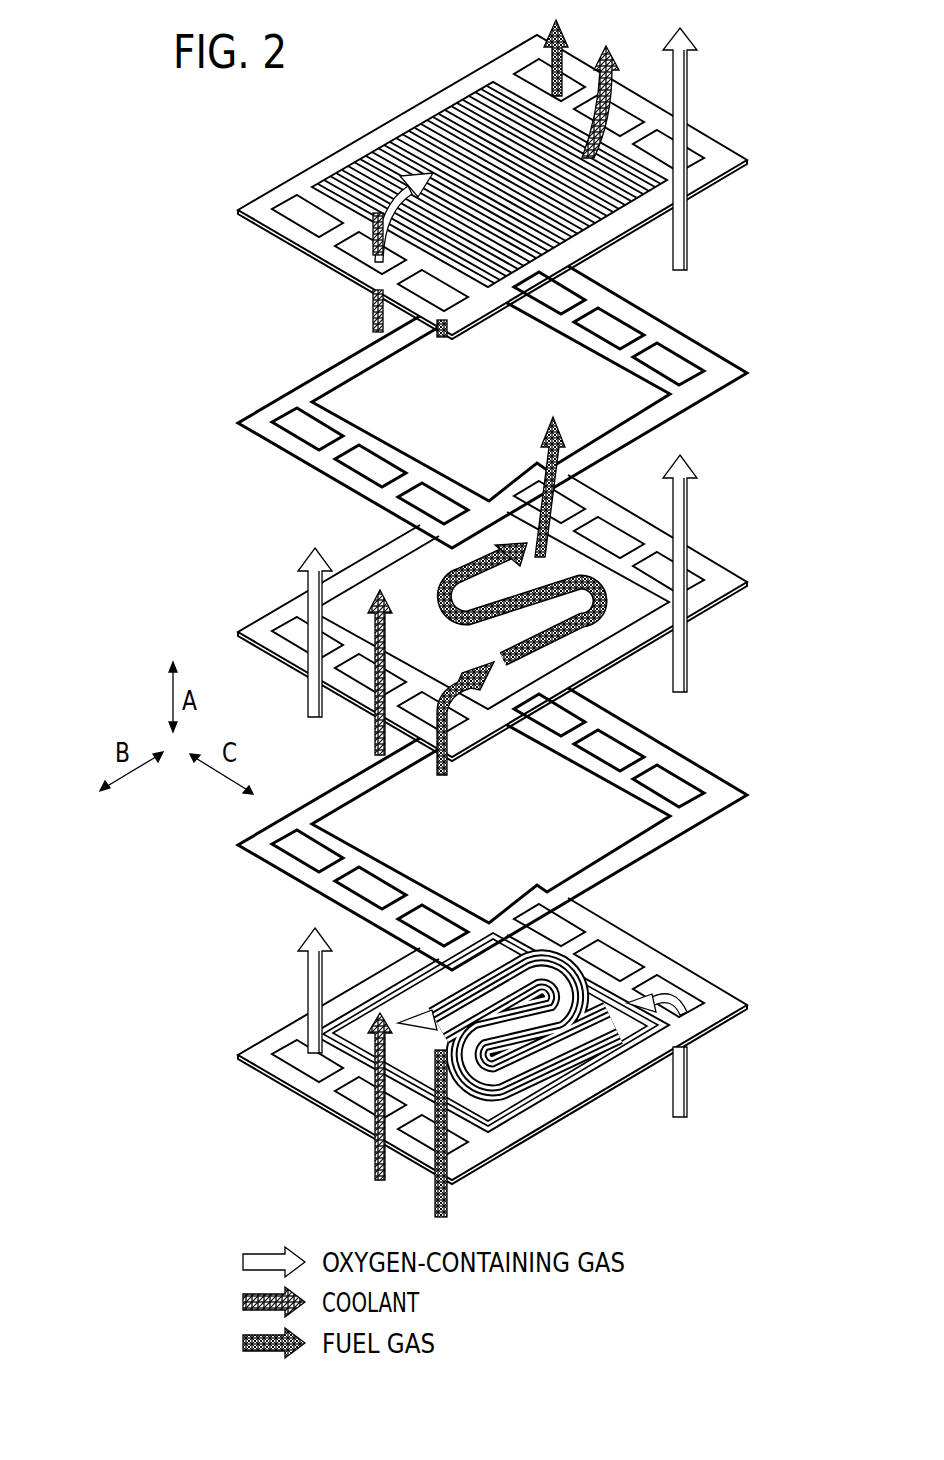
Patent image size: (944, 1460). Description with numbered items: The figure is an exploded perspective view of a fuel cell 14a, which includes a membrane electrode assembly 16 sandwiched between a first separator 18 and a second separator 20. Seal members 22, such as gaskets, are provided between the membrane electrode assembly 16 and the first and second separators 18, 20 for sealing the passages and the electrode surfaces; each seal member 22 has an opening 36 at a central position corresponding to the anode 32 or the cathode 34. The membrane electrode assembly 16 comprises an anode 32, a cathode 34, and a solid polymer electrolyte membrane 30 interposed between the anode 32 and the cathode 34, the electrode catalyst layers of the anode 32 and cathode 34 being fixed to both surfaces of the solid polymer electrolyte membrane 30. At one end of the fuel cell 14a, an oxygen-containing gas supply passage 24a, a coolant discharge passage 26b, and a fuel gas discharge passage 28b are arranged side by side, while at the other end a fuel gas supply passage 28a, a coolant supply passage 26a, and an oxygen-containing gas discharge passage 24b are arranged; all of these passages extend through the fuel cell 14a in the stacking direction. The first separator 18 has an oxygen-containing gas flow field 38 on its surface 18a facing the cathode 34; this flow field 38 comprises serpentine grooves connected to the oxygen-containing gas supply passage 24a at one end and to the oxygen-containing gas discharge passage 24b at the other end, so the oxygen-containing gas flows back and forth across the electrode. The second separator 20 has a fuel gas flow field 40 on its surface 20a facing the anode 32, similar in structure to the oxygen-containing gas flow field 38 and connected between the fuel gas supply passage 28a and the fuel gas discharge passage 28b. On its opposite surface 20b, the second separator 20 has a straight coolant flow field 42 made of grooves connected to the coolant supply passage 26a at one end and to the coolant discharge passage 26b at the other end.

The fuel cell 14a is at (146, 151).
The membrane electrode assembly 16 is at (734, 609).
The first separator 18 is at (719, 1043).
The surface of the first separator 18a is at (270, 1053).
The second separator 20 is at (734, 182).
The surface of the second separator 20a is at (335, 163).
The surface of the second separator 20b is at (387, 130).
The seal member 22 is at (732, 390).
The oxygen-containing gas supply passage 24a is at (692, 157).
The oxygen-containing gas discharge passage 24b is at (310, 217).
The coolant supply passage 26a is at (365, 250).
The coolant discharge passage 26b is at (622, 120).
The fuel gas supply passage 28a is at (425, 284).
The fuel gas discharge passage 28b is at (565, 83).
The solid polymer electrolyte membrane 30 is at (280, 622).
The anode 32 is at (393, 567).
The cathode 34 is at (602, 618).
The opening 36 is at (347, 392).
The oxygen-containing gas flow field 38 is at (523, 1100).
The fuel gas flow field 40 is at (563, 213).
The coolant flow field 42 is at (588, 193).